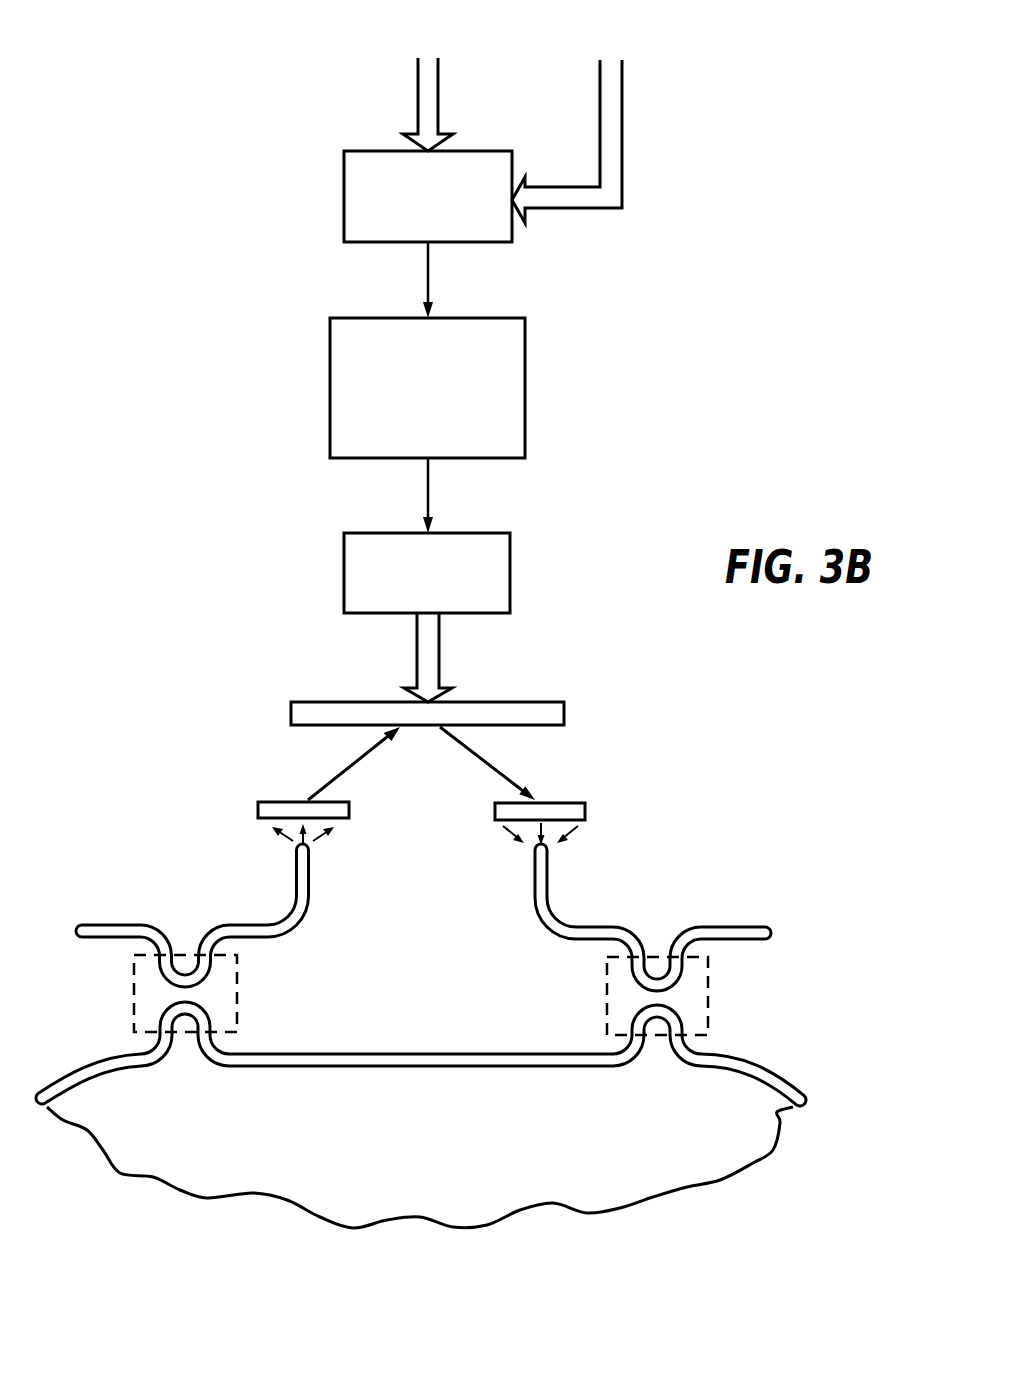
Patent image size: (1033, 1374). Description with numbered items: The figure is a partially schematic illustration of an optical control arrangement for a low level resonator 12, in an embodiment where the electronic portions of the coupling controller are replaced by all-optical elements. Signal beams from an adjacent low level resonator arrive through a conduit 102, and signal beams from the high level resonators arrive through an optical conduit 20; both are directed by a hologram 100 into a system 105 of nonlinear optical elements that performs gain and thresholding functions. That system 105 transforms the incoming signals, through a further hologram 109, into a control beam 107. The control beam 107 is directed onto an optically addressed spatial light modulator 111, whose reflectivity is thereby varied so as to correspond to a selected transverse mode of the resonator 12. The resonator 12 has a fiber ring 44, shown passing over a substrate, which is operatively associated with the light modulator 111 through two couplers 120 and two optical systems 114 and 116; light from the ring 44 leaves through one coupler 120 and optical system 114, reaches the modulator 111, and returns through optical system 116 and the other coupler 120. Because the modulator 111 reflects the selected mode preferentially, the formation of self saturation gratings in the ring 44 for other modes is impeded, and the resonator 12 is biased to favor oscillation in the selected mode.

The conduit 102 is at (417, 72).
The optical conduit 20 is at (600, 100).
The hologram 100 is at (343, 195).
The system of nonlinear optical elements 105 is at (330, 343).
The hologram 109 is at (344, 573).
The control beam 107 is at (439, 652).
The optically addressed spatial light modulator 111 is at (564, 715).
The optical system 114 is at (258, 805).
The optical system 116 is at (585, 812).
The couplers 120 is at (122, 977).
The fiber ring 44 is at (762, 1070).
The resonator 12 is at (725, 1190).